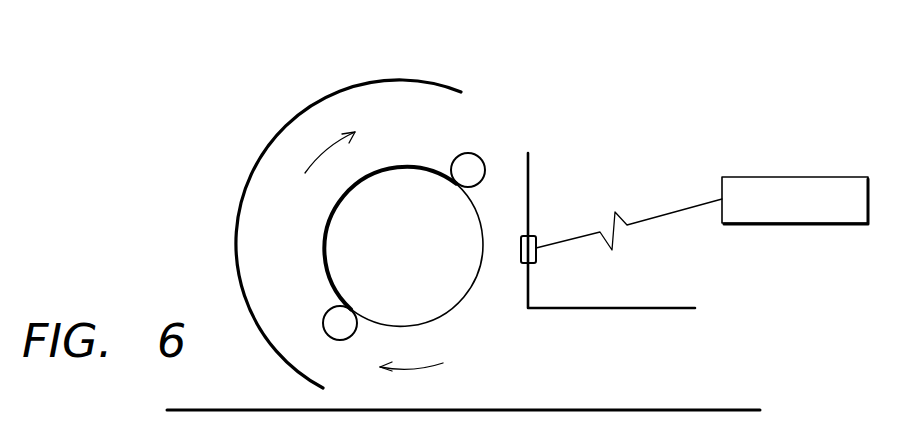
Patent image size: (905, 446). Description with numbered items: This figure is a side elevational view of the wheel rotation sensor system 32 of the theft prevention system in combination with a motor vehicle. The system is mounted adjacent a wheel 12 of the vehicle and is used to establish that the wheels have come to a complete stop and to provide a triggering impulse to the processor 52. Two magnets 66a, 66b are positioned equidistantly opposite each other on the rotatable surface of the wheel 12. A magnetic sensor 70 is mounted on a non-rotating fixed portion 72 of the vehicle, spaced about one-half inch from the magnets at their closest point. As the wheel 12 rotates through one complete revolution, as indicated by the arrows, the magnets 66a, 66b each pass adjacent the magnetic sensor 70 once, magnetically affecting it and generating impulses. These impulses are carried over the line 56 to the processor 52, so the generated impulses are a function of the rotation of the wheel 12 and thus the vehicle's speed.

The wheel 12 is at (317, 107).
The wheel rotation sensor system 32 is at (538, 105).
The processor 52 is at (842, 177).
The line 56 is at (670, 212).
The magnet 66a is at (468, 153).
The magnet 66b is at (323, 330).
The magnetic sensor 70 is at (537, 260).
The fixed portion 72 is at (528, 210).